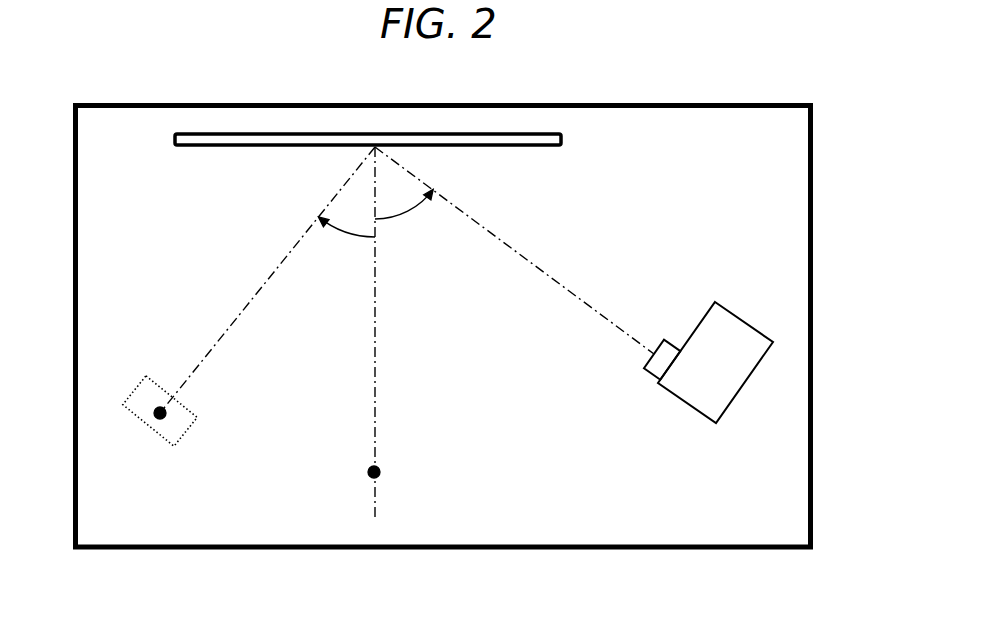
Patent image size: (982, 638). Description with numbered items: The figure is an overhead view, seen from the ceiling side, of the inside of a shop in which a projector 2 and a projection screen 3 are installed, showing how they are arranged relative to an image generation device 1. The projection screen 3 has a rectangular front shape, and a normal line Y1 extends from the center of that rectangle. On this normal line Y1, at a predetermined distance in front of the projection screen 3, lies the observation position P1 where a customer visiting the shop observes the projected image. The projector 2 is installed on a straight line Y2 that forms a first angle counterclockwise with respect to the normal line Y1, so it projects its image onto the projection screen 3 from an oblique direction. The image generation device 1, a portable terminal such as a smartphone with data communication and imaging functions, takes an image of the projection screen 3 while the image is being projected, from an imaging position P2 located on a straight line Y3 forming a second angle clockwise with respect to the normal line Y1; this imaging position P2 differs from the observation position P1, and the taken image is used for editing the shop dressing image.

The image generation device 1 is at (157, 440).
The projector 2 is at (683, 403).
The projection screen 3 is at (563, 143).
The observation position P1 is at (379, 473).
The imaging position P2 is at (165, 417).
The normal line Y1 is at (377, 358).
The straight line Y2 is at (553, 272).
The straight line Y3 is at (240, 313).